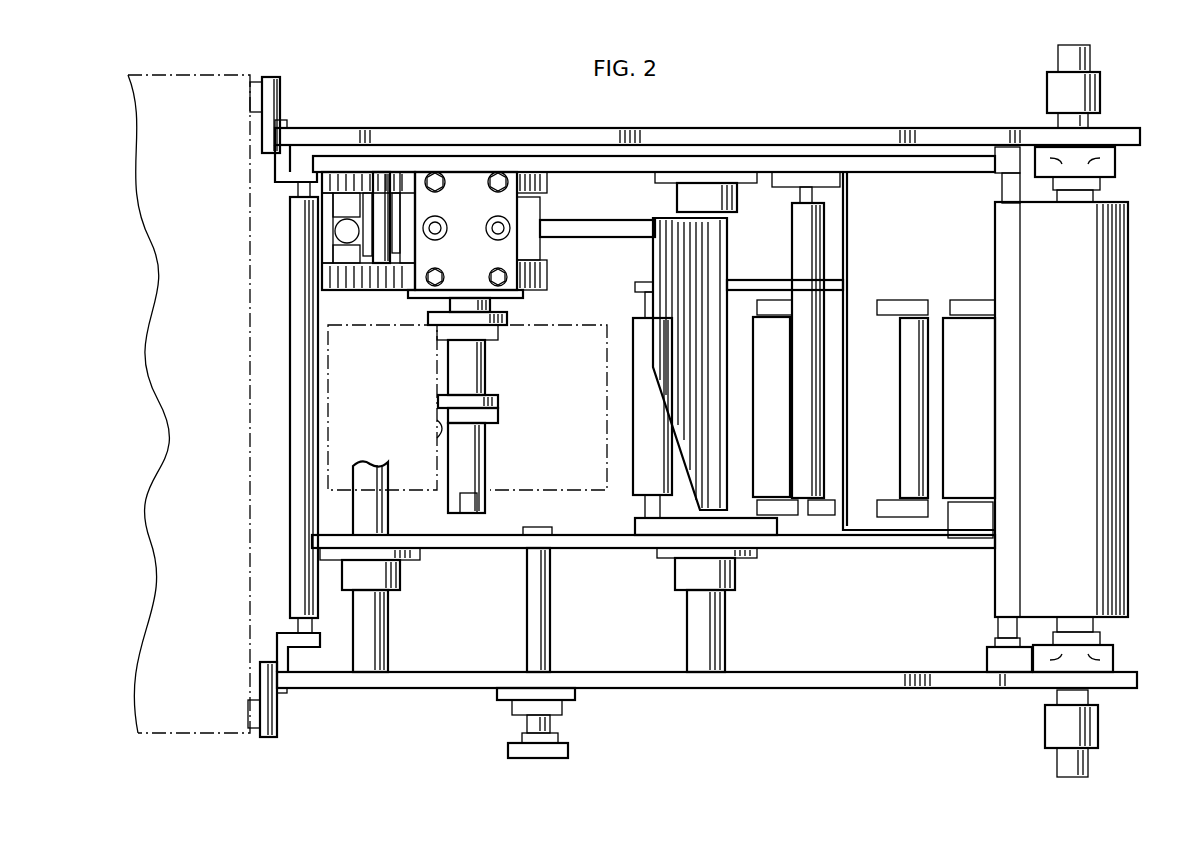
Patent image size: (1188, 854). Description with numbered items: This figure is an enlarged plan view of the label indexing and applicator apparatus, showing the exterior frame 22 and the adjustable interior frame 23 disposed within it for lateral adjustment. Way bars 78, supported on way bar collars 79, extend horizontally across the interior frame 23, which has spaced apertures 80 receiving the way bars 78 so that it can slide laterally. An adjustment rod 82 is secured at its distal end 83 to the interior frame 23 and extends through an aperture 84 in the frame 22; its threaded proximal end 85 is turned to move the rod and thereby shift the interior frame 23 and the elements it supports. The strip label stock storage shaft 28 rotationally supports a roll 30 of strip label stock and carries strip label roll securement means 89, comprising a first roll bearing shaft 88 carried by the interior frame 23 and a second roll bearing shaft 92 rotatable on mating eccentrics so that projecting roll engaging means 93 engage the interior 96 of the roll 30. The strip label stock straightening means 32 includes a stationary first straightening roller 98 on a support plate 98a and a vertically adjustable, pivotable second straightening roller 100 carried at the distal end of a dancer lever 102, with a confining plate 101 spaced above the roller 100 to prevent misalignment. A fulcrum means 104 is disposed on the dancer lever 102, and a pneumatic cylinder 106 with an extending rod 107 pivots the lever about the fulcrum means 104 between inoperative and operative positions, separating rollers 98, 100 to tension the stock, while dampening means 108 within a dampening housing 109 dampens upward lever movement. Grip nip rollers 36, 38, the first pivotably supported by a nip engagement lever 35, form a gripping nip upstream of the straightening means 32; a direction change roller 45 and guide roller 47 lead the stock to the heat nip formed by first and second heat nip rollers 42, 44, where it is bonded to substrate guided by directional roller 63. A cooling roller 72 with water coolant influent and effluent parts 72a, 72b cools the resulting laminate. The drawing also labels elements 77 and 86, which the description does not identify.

The frame 22 is at (672, 137).
The interior frame 23 is at (778, 165).
The strip label stock storage shaft 28 is at (490, 301).
The roll 30 is at (343, 424).
The strip label stock straightening means 32 is at (593, 220).
The nip engagement lever 35 is at (783, 508).
The first grip nip roller 36 is at (760, 402).
The second grip nip roller 38 is at (826, 420).
The first heat nip roller 42 is at (956, 376).
The second heat nip roller 44 is at (1003, 577).
The direction change roller 45 is at (844, 232).
The guide roller 47 is at (902, 358).
The substrate stock directional roller 63 is at (297, 405).
The cooling roller 72 is at (1048, 350).
The water coolant influent part 72a is at (1100, 708).
The water coolant effluent part 72b is at (1103, 88).
The roller compartment 77 is at (903, 254).
The way bars 78 is at (367, 507).
The way bar collars 79 is at (735, 195).
The spaced apertures 80 is at (388, 533).
The adjustment rod 82 is at (534, 607).
The distal end 83 is at (527, 550).
The aperture 84 is at (548, 672).
The threaded proximal end 85 is at (530, 657).
The foot 86 is at (548, 725).
The first roll bearing shaft 88 is at (495, 352).
The strip label roll securement means 89 is at (503, 397).
The second roll bearing shaft 92 is at (485, 470).
The projecting roll engaging means 93 is at (497, 414).
The interior 96 is at (430, 443).
The first straightening roller 98 is at (647, 475).
The support plate 98a is at (657, 527).
The second straightening roller 100 is at (740, 330).
The confining plate 101 is at (672, 320).
The dancer lever 102 is at (606, 226).
The fulcrum means 104 is at (385, 205).
The pneumatic cylinder 106 is at (338, 218).
The extending rod 107 is at (441, 225).
The dampening means 108 is at (490, 172).
The dampening housing 109 is at (474, 260).